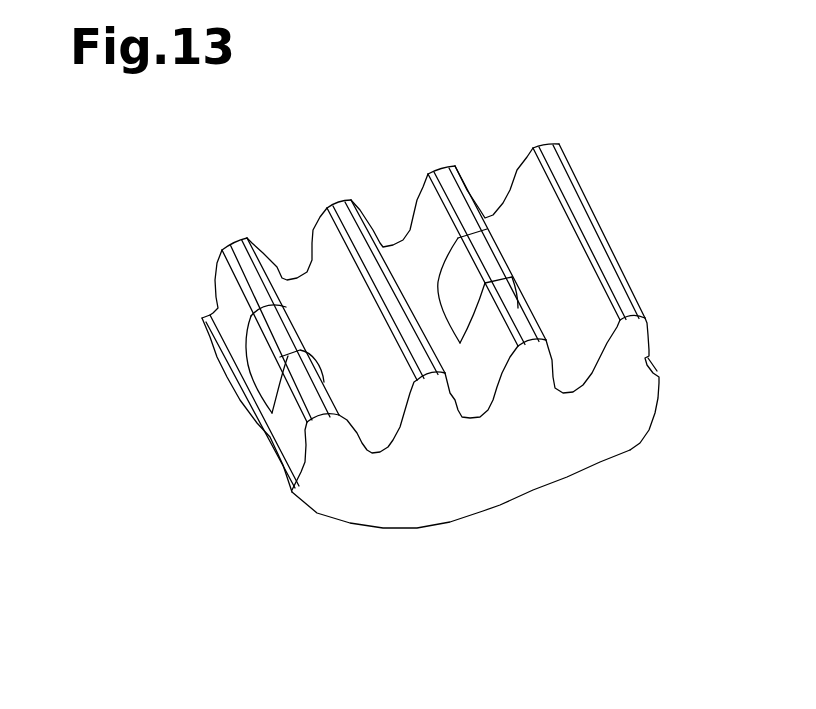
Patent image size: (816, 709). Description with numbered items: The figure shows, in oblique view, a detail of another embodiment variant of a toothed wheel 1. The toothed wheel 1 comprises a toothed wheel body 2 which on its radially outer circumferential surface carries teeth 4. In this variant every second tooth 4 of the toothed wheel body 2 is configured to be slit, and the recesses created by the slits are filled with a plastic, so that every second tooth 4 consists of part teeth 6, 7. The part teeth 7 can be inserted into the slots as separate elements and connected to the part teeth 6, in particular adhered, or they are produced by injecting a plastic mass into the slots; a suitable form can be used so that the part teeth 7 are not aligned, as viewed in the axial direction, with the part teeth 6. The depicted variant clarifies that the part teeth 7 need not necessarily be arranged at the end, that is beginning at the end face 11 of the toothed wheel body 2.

The toothed wheel 1 is at (537, 136).
The toothed wheel body 2 is at (528, 452).
The teeth 4 is at (312, 203).
The part teeth 6 is at (385, 390).
The part teeth 7 is at (247, 322).
The end face 11 is at (573, 422).